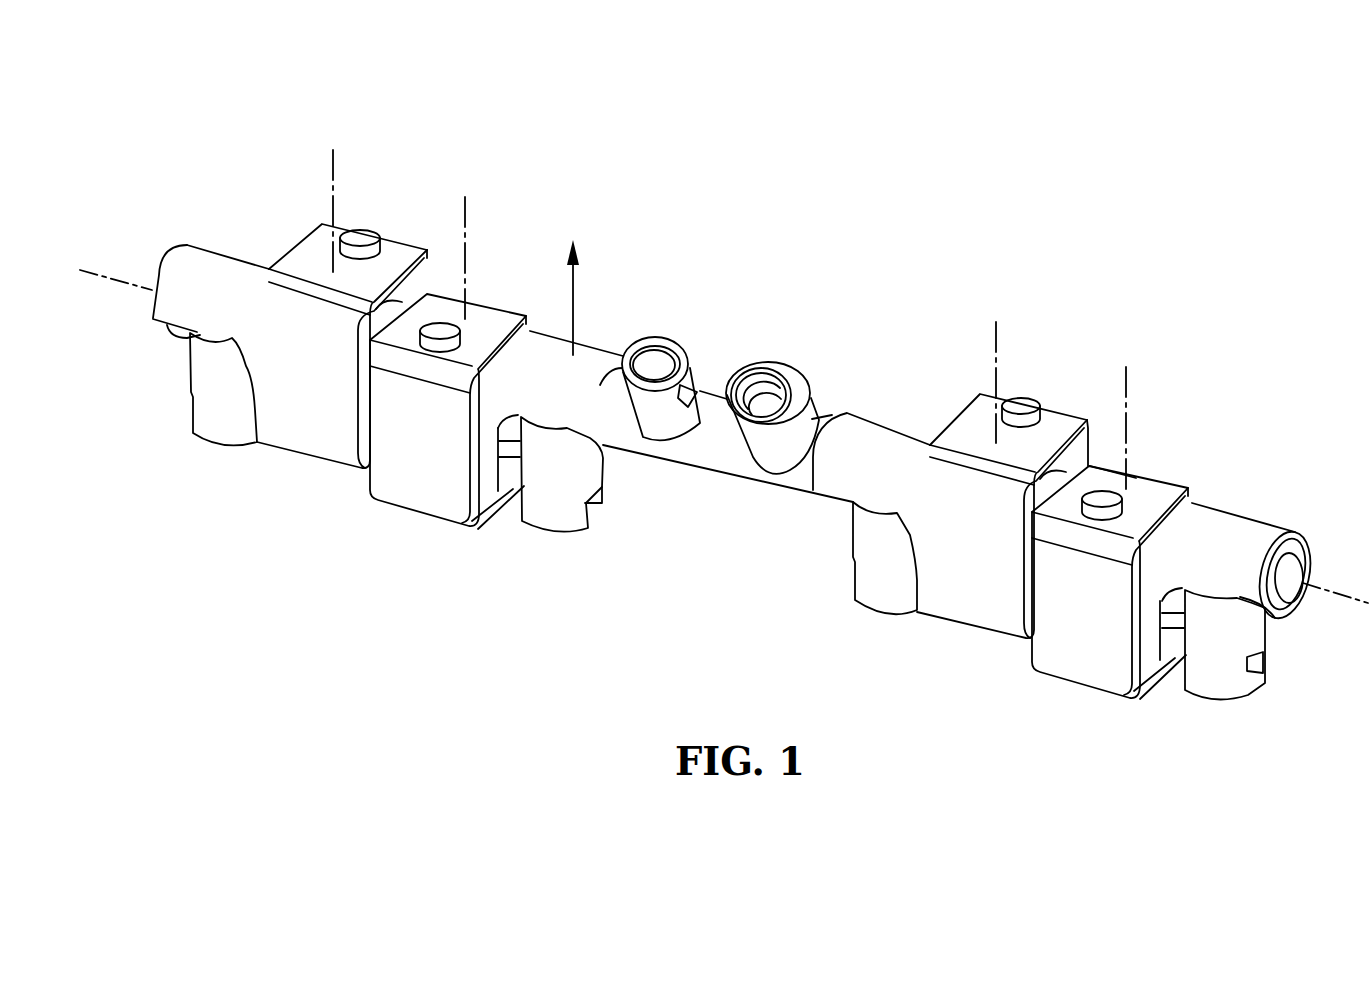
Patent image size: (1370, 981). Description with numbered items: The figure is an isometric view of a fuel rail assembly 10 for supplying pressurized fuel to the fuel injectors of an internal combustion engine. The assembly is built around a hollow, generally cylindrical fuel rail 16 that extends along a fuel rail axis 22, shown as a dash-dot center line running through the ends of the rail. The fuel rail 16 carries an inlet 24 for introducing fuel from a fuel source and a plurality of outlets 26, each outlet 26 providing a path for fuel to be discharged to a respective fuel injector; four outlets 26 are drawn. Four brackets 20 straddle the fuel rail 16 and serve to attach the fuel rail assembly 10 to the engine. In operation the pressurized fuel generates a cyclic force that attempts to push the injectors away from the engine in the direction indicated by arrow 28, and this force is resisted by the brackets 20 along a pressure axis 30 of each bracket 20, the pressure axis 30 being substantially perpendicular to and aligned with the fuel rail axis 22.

The fuel rail assembly 10 is at (848, 259).
The fuel rail 16 is at (690, 460).
The bracket 20 is at (297, 427).
The fuel rail axis 22 is at (1350, 599).
The inlet 24 is at (657, 358).
The outlet 26 is at (210, 420).
The arrow 28 is at (576, 283).
The pressure axis 30 is at (335, 168).